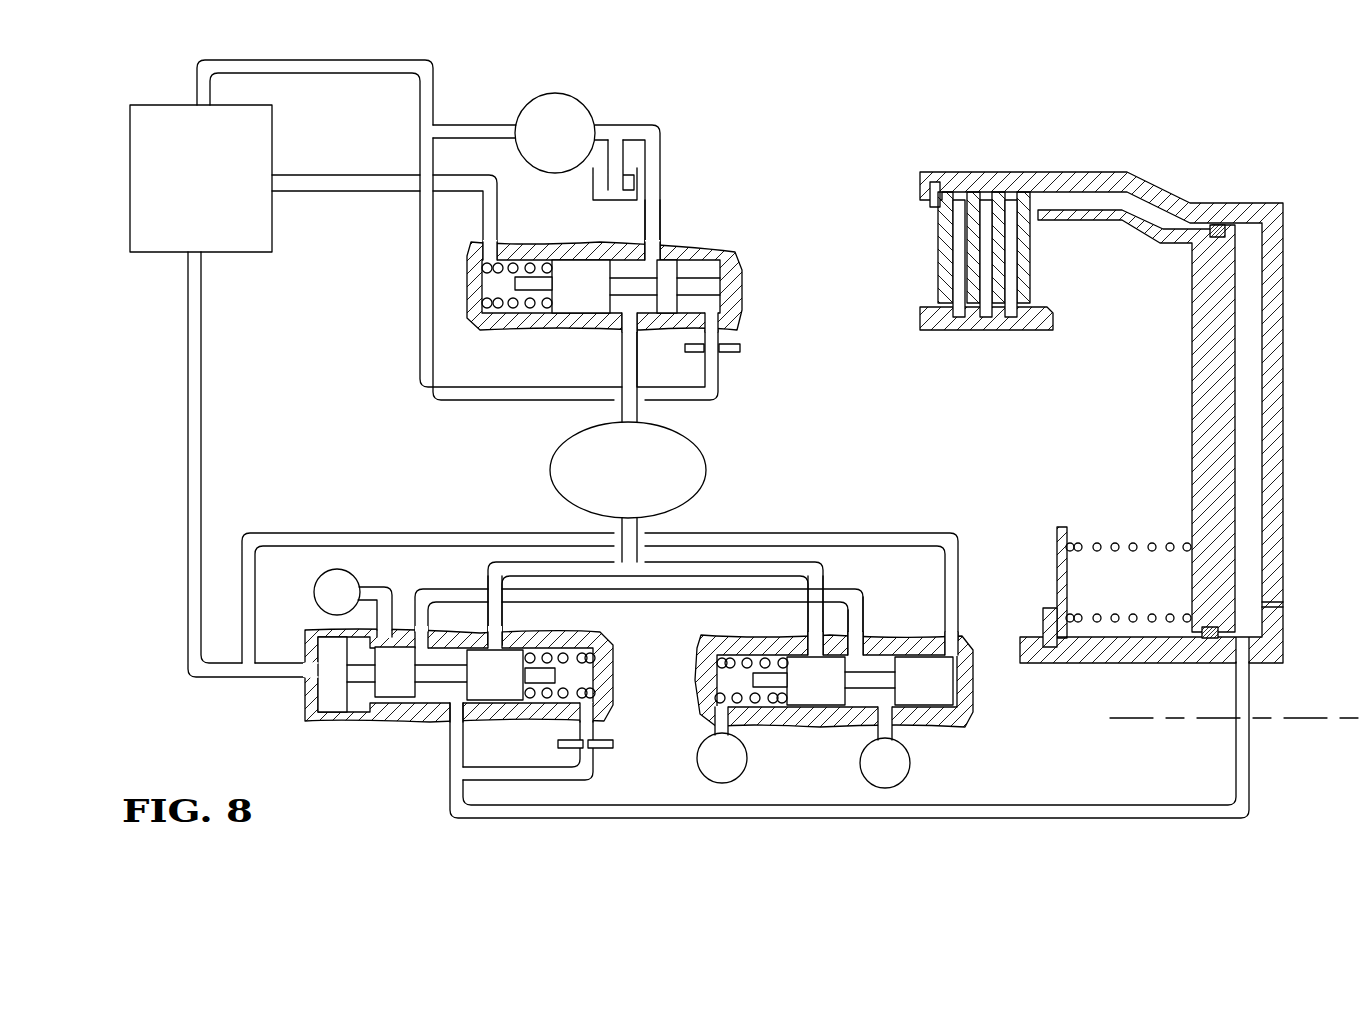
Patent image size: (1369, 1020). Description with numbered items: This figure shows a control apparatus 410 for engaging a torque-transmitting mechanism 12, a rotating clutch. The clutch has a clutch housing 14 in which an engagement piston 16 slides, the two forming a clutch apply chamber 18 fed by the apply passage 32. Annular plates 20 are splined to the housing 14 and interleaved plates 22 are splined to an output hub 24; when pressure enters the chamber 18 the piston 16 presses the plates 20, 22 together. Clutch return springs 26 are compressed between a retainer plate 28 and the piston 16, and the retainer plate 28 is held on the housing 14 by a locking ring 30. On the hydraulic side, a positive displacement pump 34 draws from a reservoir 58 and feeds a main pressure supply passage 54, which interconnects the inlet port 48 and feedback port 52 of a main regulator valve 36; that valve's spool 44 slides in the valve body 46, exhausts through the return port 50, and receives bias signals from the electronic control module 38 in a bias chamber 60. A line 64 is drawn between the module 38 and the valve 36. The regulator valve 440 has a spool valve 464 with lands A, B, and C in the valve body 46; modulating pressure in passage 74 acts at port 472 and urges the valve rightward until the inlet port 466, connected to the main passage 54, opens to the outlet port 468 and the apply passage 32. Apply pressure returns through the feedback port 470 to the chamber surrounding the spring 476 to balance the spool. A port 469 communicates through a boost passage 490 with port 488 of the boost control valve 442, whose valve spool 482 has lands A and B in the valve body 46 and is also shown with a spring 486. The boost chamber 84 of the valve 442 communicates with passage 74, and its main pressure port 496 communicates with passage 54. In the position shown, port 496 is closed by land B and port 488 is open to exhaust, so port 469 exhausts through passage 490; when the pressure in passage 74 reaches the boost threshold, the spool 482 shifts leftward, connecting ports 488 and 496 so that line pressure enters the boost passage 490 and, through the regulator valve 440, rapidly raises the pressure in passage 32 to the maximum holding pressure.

The torque-transmitting mechanism 12 is at (1121, 418).
The clutch housing 14 is at (1283, 221).
The engagement piston 16 is at (1213, 327).
The clutch apply chamber 18 is at (1250, 400).
The annular plates 20 is at (1023, 198).
The plates 22 is at (1011, 318).
The output hub 24 is at (920, 320).
The clutch return springs 26 is at (1115, 547).
The retainer plate 28 is at (1057, 547).
The locking ring 30 is at (1043, 627).
The apply passage 32 is at (596, 820).
The positive displacement pump 34 is at (527, 98).
The main regulator valve 36 is at (598, 276).
The electronic control module 38 is at (164, 100).
The valve spool 44 is at (528, 277).
The valve body 46 is at (709, 250).
The inlet port 48 is at (622, 355).
The return port 50 is at (650, 258).
The feedback port 52 is at (718, 336).
The main pressure supply passage 54 is at (420, 277).
The reservoir 58 is at (626, 170).
The bias chamber 60 is at (484, 306).
The control signal line 64 is at (323, 175).
The modulating passage 74 is at (188, 408).
The boost chamber 84 is at (958, 712).
The control apparatus 410 is at (731, 168).
The regulator valve 440 is at (445, 674).
The boost control valve 442 is at (824, 683).
The spool valve 464 is at (361, 667).
The inlet port 466 is at (496, 645).
The outlet port 468 is at (461, 704).
The port 469 is at (421, 632).
The feedback port 470 is at (590, 723).
The port 472 is at (306, 672).
The spring 476 is at (603, 637).
The valve spool 482 is at (868, 673).
The valve spring 486 is at (727, 668).
The port 488 is at (857, 650).
The boost passage 490 is at (729, 589).
The main pressure port 496 is at (814, 643).